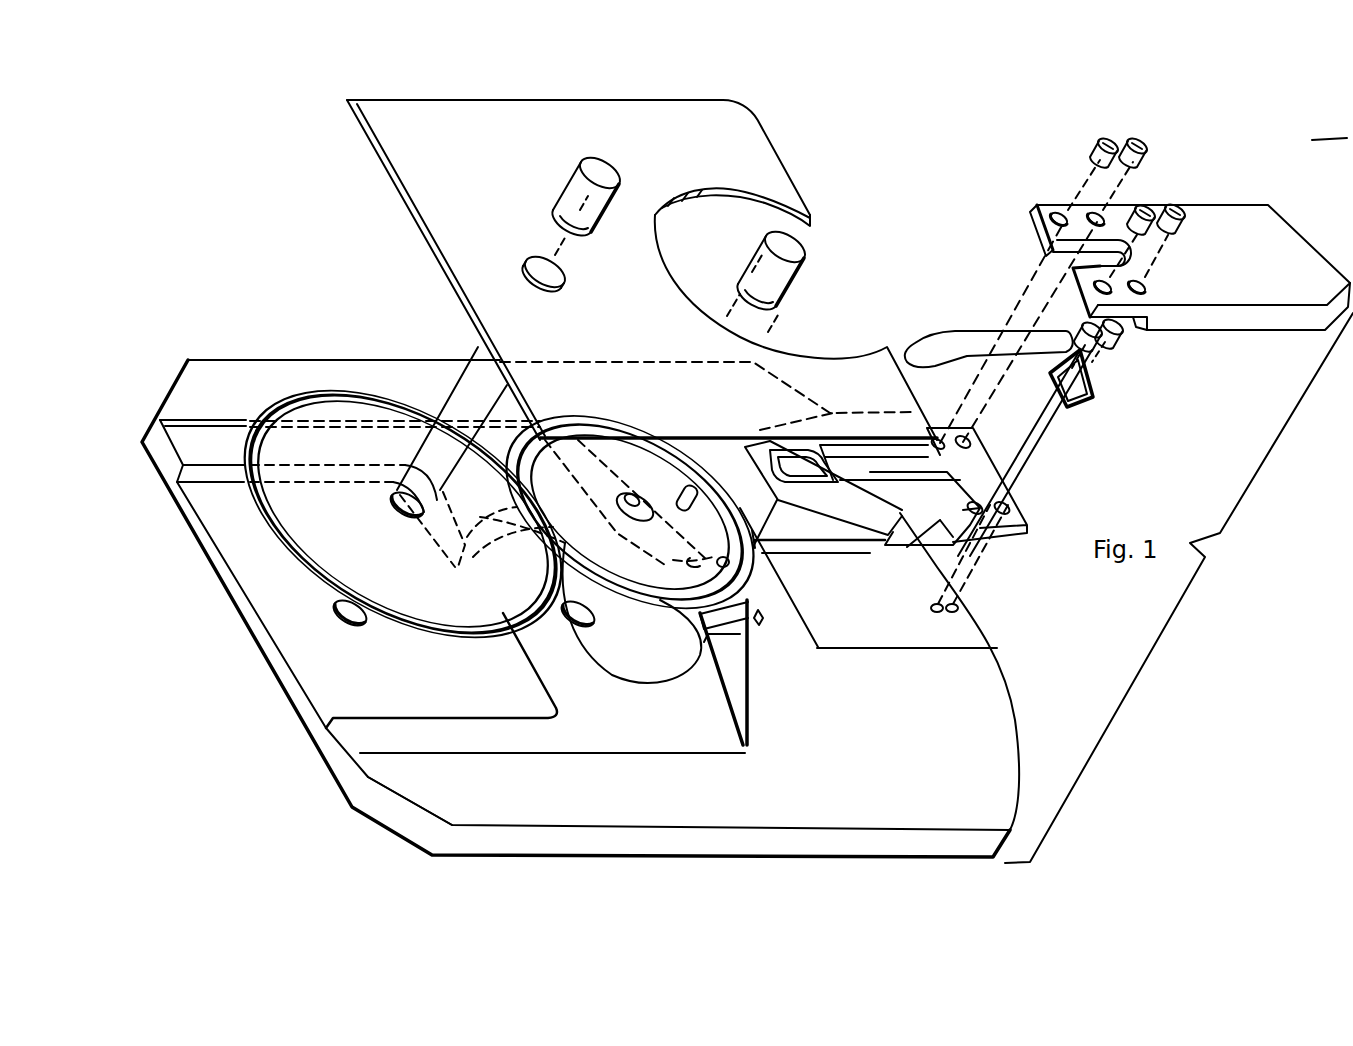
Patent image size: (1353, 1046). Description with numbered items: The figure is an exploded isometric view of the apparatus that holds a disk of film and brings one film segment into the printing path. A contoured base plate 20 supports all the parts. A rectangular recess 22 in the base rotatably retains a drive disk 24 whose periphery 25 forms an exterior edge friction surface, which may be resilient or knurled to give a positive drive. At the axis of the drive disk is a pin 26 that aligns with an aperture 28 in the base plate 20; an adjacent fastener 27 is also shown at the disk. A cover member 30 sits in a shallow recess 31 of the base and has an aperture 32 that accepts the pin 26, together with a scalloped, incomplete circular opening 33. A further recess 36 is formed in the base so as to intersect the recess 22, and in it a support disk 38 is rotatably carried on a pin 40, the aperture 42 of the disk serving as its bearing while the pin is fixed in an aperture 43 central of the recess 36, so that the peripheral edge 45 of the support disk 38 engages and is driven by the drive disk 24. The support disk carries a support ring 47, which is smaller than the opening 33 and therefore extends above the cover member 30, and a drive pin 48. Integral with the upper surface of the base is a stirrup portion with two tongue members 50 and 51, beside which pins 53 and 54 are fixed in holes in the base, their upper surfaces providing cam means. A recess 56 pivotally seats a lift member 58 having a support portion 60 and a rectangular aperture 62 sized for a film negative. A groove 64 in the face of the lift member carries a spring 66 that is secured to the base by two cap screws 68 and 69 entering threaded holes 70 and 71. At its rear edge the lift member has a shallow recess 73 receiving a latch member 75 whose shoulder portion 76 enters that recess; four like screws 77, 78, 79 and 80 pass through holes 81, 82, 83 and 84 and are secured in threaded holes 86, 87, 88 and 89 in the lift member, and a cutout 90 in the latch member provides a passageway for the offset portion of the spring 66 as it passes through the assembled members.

The base plate 20 is at (1003, 703).
The recess 22 is at (302, 680).
The drive disk 24 is at (364, 402).
The periphery 25 is at (280, 532).
The pin 26 is at (600, 168).
The screw 27 is at (400, 512).
The aperture 28 is at (348, 630).
The cover member 30 is at (402, 190).
The shallow recess 31 is at (350, 745).
The aperture 32 is at (538, 278).
The circular opening 33 is at (713, 205).
The recess 36 is at (612, 660).
The support disk 38 is at (560, 430).
The pin 40 is at (798, 252).
The aperture 42 is at (640, 496).
The aperture 43 is at (563, 609).
The peripheral edge 45 is at (750, 600).
The support ring 47 is at (756, 530).
The drive pin 48 is at (704, 468).
The tongue member 50 is at (720, 630).
The tongue member 51 is at (698, 558).
The pin 53 is at (761, 627).
The pin 54 is at (735, 563).
The recess 56 is at (852, 645).
The lift member 58 is at (850, 520).
The support portion 60 is at (906, 530).
The aperture 62 is at (843, 480).
The groove 64 is at (893, 432).
The spring 66 is at (964, 330).
The cap screw 68 is at (1095, 398).
The cap screw 69 is at (1105, 356).
The threaded hole 70 is at (930, 608).
The threaded hole 71 is at (960, 608).
The shallow recess 73 is at (1000, 477).
The latch member 75 is at (1275, 225).
The shoulder portion 76 is at (1137, 330).
The screw 77 is at (1188, 216).
The screw 78 is at (1152, 208).
The screw 79 is at (1147, 142).
The screw 80 is at (1112, 140).
The pass through hole 81 is at (1147, 286).
The pass through hole 82 is at (1092, 292).
The pass through hole 83 is at (1050, 220).
The pass through hole 84 is at (1100, 216).
The threaded hole 86 is at (1012, 507).
The threaded hole 87 is at (970, 510).
The threaded hole 88 is at (940, 440).
The threaded hole 89 is at (970, 440).
The cutout 90 is at (1080, 258).